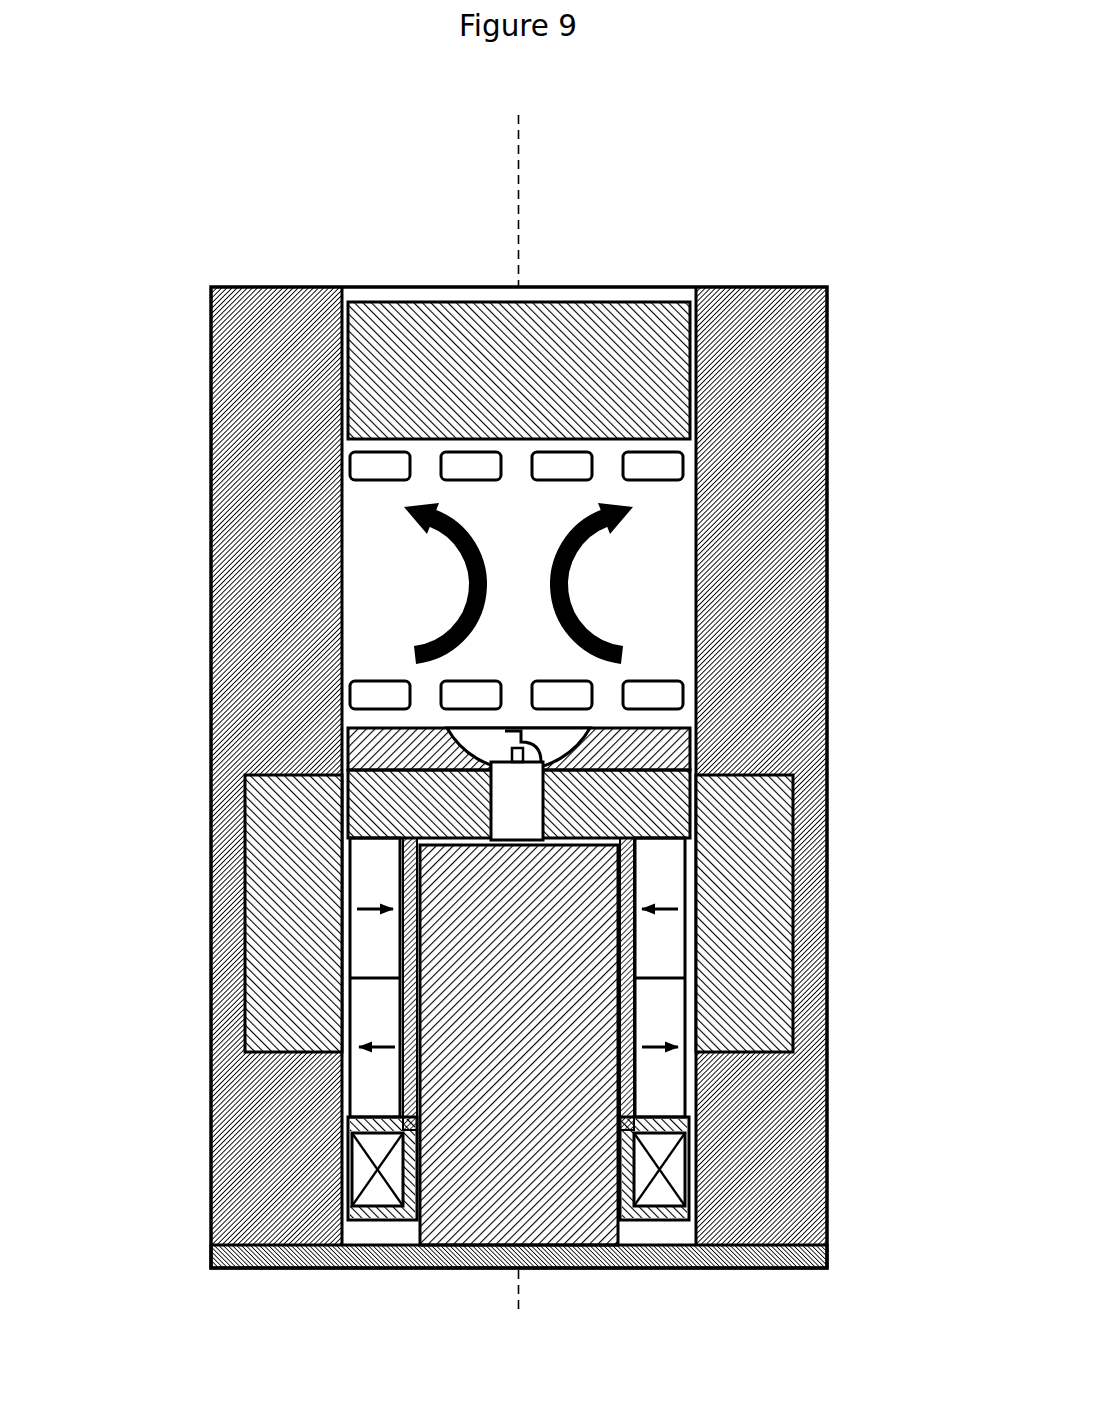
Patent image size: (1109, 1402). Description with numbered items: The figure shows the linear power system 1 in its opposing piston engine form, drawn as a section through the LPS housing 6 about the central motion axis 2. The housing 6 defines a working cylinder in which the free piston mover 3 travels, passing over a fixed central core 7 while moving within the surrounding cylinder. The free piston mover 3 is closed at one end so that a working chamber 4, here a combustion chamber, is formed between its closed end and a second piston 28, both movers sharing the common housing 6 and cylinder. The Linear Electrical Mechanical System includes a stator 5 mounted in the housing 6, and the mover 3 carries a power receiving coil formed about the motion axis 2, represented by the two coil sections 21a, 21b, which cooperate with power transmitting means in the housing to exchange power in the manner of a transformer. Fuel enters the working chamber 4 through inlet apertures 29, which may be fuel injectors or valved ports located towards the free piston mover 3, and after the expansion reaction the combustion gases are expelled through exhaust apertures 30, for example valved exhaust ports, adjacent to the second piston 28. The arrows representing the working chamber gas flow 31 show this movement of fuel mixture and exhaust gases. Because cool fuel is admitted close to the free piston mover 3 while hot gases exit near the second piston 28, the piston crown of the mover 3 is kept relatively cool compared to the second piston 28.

The loudspeaker transducer 1 is at (848, 257).
The motion axis 2 is at (525, 232).
The free piston mover 3 is at (370, 787).
The working chamber 4 is at (365, 619).
The stator 5 is at (755, 973).
The LPS housing 6 is at (755, 597).
The fixed central core 7 is at (370, 1268).
The power receiving means coil section 21a is at (358, 1168).
The power receiving means coil section 21b is at (672, 1163).
The second piston 28 is at (373, 414).
The inlet apertures 29 is at (653, 695).
The exhaust apertures 30 is at (655, 465).
The working chamber gas flow 31 is at (518, 579).